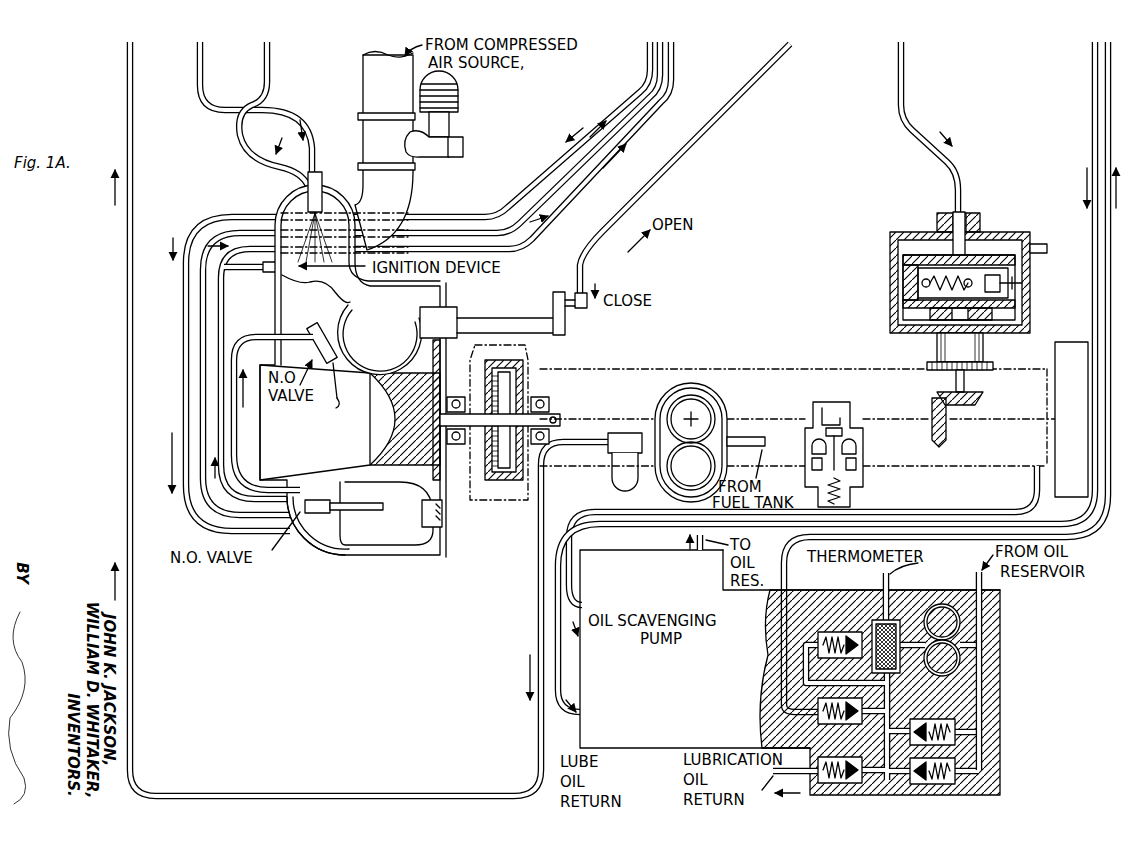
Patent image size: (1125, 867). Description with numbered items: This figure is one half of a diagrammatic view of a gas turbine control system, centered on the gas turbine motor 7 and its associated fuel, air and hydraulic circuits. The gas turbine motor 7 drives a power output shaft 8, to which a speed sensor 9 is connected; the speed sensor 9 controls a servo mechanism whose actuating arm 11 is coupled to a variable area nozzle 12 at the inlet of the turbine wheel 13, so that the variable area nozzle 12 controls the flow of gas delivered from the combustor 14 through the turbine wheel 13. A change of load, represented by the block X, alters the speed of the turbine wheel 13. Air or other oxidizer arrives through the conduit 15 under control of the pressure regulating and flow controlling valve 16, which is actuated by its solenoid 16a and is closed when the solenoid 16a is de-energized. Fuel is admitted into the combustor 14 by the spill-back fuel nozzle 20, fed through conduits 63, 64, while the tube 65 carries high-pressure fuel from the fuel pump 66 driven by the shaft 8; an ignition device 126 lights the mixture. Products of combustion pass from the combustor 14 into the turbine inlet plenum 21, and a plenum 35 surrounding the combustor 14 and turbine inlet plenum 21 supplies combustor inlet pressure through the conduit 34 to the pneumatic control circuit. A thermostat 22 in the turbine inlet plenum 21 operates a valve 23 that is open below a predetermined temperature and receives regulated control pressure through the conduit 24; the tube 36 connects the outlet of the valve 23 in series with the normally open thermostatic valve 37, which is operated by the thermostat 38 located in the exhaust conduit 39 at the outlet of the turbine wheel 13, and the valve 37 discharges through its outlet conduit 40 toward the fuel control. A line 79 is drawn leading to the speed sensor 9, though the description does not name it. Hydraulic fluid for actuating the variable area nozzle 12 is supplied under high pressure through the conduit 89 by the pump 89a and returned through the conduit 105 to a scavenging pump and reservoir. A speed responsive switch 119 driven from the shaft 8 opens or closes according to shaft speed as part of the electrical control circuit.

The gas turbine motor 7 is at (301, 546).
The power output shaft 8 is at (553, 417).
The speed sensor 9 is at (889, 248).
The actuating arm 11 is at (748, 92).
The variable area nozzle 12 is at (438, 322).
The turbine wheel 13 is at (441, 355).
The combustor 14 is at (324, 192).
The conduit 15 is at (364, 70).
The pressure regulating and flow controlling valve 16 is at (436, 154).
The solenoid 16a is at (463, 150).
The fuel nozzle 20 is at (294, 212).
The turbine inlet plenum 21 is at (408, 557).
The thermostat 22 is at (380, 512).
The valve 23 is at (315, 514).
The conduit 24 is at (647, 55).
The conduit 34 is at (663, 98).
The plenum 35 is at (350, 556).
The tube 36 is at (238, 435).
The normally open thermostatic valve 37 is at (340, 335).
The thermostat 38 is at (336, 407).
The exhaust conduit 39 is at (338, 462).
The outlet conduit 40 is at (675, 50).
The conduit 63 is at (267, 95).
The conduit 64 is at (198, 84).
The tube 65 is at (127, 86).
The fuel pump 66 is at (728, 418).
The governor supply pipe 79 is at (905, 95).
The conduit 89 is at (1105, 72).
The pump 89a is at (962, 633).
The conduit 105 is at (1093, 124).
The speed responsive switch 119 is at (865, 478).
The ignition device 126 is at (285, 288).
The load X is at (1076, 342).